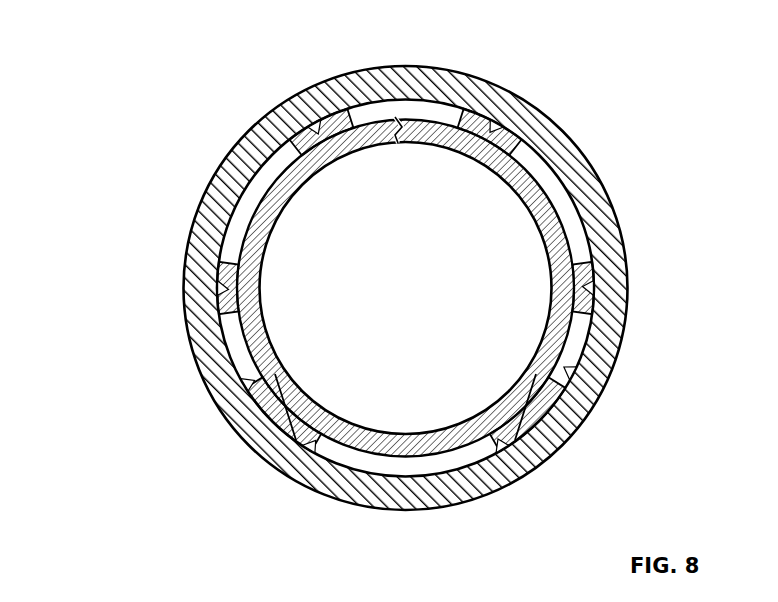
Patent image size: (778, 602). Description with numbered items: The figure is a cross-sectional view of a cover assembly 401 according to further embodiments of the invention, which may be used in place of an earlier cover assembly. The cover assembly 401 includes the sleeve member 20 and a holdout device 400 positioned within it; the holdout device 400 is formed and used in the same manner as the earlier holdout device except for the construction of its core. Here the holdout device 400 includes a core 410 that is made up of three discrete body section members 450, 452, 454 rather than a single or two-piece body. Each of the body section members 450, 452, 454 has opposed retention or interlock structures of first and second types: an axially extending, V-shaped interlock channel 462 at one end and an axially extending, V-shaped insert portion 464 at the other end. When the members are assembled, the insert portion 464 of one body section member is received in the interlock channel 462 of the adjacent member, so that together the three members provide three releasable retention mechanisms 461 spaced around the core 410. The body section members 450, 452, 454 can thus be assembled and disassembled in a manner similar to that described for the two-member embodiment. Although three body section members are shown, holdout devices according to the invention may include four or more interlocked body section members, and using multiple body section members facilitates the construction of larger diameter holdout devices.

The cover assembly 401 is at (120, 46).
The holdout device 400 is at (377, 317).
The core 410 is at (427, 458).
The sleeve member 20 is at (197, 292).
The body section member 450 is at (451, 283).
The body section member 452 is at (518, 398).
The body section member 454 is at (565, 213).
The releasable retention mechanism 461 is at (397, 152).
The interlock channel 462 is at (401, 121).
The insert portion 464 is at (386, 126).